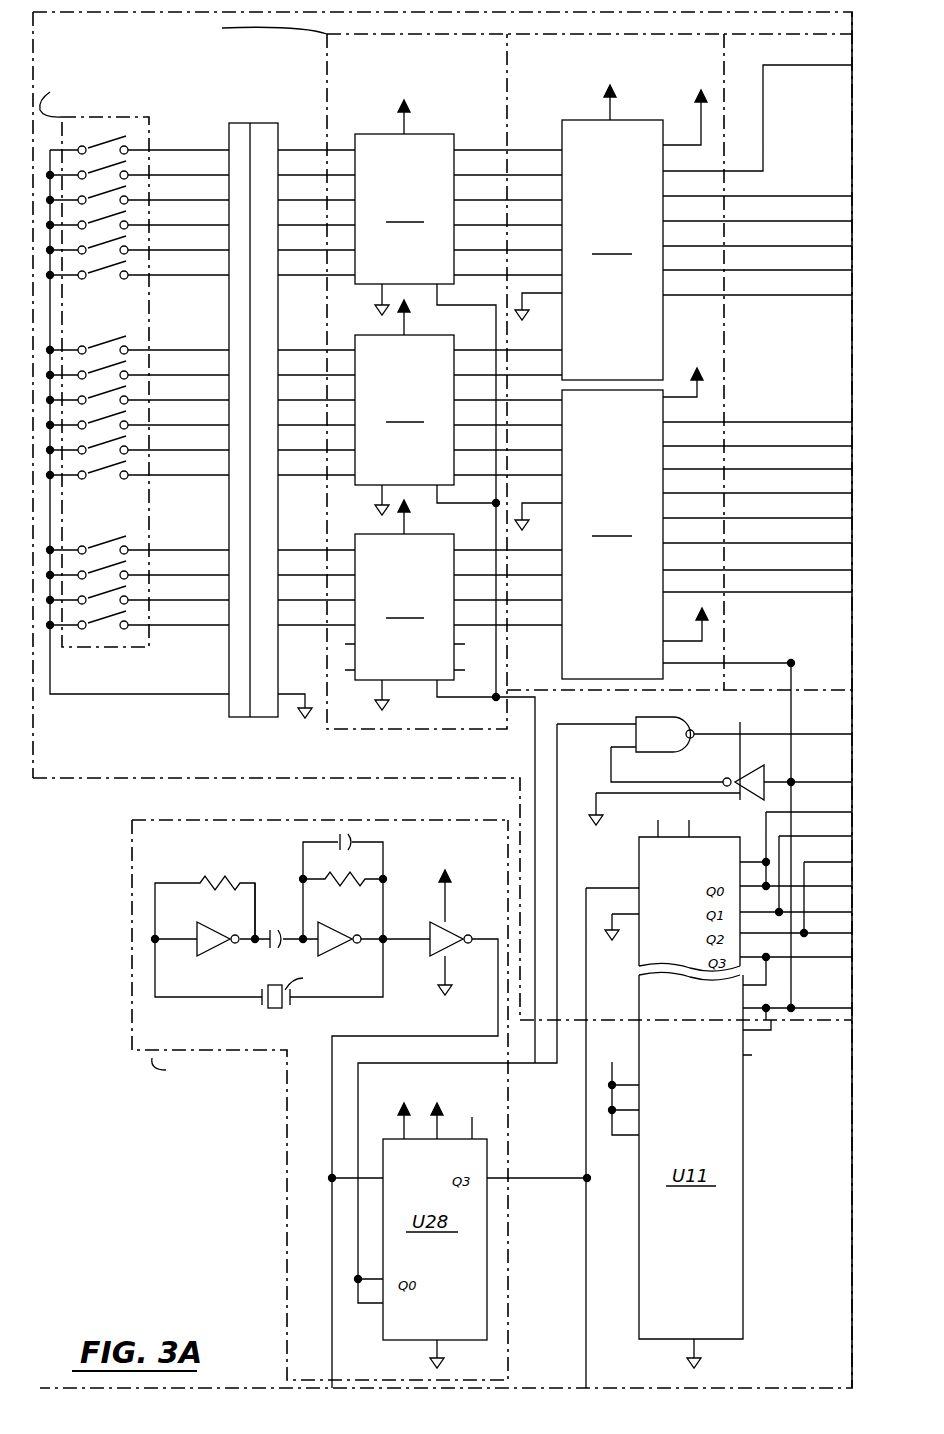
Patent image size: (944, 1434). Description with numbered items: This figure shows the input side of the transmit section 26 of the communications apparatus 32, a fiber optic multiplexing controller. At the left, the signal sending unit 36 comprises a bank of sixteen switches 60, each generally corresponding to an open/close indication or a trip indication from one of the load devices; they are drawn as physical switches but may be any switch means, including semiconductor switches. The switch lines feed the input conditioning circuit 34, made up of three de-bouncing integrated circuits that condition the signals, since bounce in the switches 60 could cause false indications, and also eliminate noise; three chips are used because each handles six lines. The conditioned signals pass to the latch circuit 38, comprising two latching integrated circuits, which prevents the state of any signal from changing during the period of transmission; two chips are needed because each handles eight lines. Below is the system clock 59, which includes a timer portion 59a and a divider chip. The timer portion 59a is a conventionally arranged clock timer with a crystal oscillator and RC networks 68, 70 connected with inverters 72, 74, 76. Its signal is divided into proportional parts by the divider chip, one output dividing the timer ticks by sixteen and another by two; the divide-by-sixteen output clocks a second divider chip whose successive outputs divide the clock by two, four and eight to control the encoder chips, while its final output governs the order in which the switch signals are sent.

The transmit section 26 is at (680, 10).
The communications apparatus 32 is at (128, 782).
The input conditioning circuit 34 is at (416, 67).
The signal sending unit 36 is at (150, 117).
The latch circuit 38 is at (578, 67).
The system clock 59 is at (132, 1050).
The timer portion 59a is at (226, 875).
The switches 60 is at (106, 142).
The RC network 68 is at (385, 852).
The RC network 70 is at (255, 890).
The inverter 72 is at (222, 928).
The inverter 74 is at (336, 928).
The inverter 76 is at (452, 928).